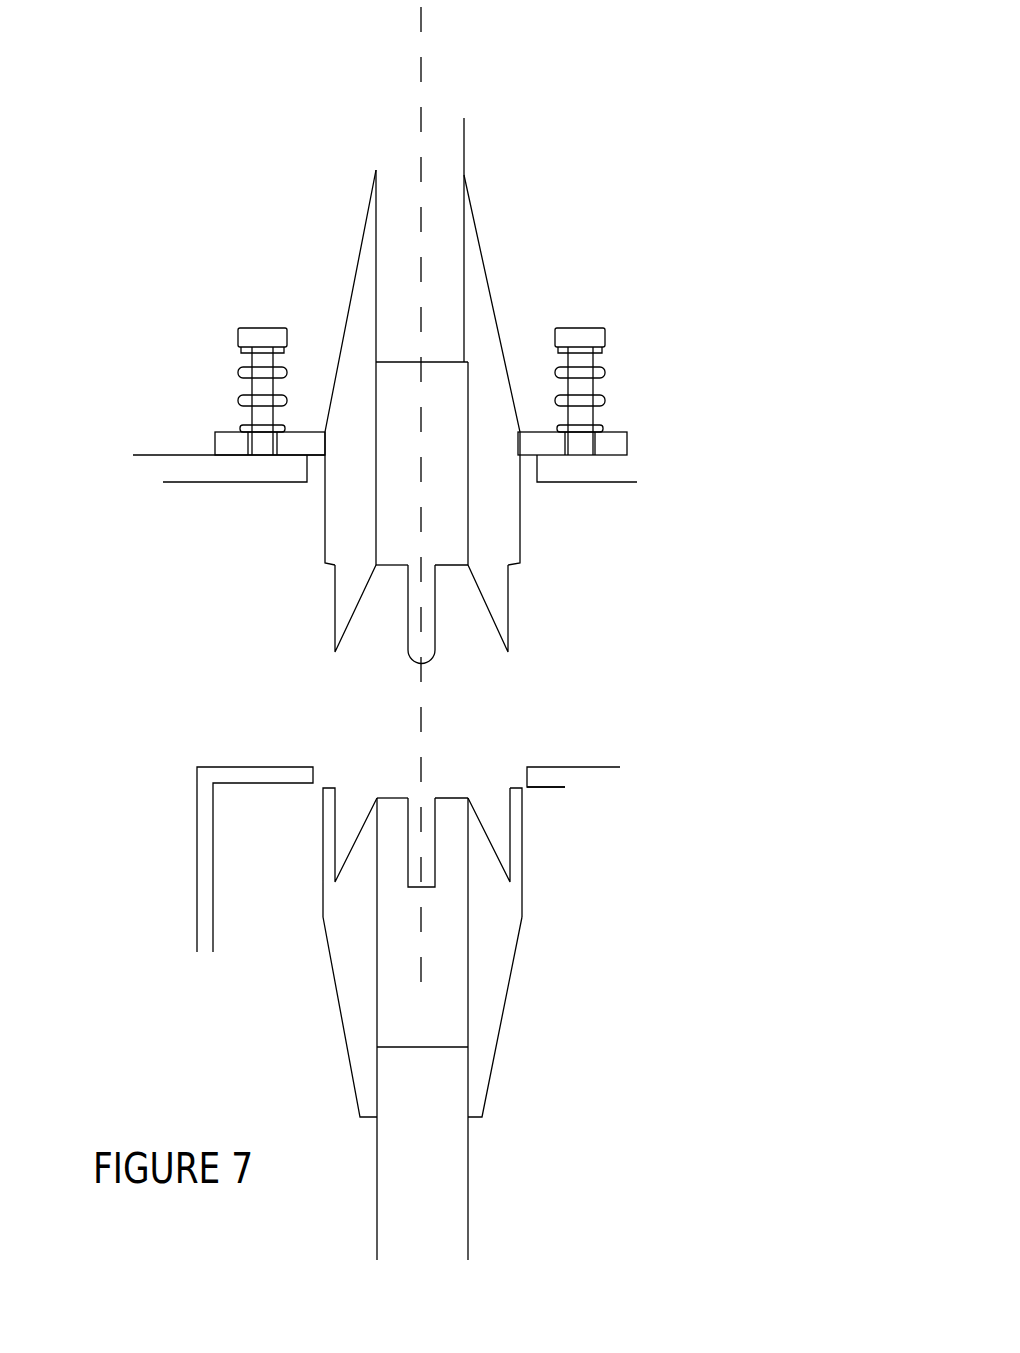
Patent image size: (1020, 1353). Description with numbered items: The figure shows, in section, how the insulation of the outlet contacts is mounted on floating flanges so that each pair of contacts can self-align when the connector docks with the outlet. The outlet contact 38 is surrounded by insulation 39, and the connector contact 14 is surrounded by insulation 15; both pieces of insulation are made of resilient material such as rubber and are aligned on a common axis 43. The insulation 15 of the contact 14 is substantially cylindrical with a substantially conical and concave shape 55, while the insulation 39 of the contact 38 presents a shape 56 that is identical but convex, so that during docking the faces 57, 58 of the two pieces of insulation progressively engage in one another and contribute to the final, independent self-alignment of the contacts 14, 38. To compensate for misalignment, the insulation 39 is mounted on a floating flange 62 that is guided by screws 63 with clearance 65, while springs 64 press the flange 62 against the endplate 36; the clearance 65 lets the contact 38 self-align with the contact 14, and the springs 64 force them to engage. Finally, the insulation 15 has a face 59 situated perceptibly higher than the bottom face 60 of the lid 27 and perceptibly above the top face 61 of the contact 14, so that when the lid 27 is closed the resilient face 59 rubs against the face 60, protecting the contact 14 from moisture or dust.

The contact 14 is at (332, 1029).
The insulation 15 is at (485, 1017).
The lid 27 is at (615, 724).
The endplate 36 is at (412, 445).
The contact 38 is at (316, 628).
The insulation 39 is at (476, 341).
The common axis 43 is at (366, 494).
The conical concave shape 55 is at (629, 876).
The convex shape 56 is at (564, 583).
The face 57 is at (307, 803).
The face 58 is at (298, 606).
The face 59 is at (606, 852).
The bottom face 60 is at (627, 817).
The top face 61 is at (462, 741).
The floating flange 62 is at (377, 398).
The screw 63 is at (366, 322).
The spring 64 is at (367, 345).
The clearance 65 is at (362, 490).